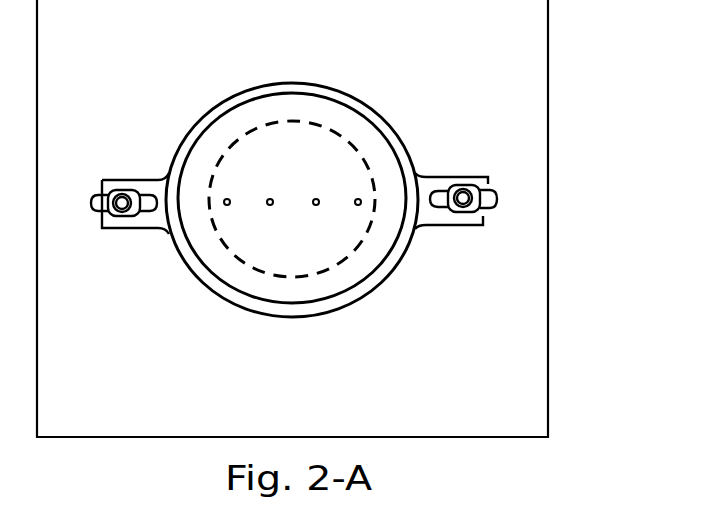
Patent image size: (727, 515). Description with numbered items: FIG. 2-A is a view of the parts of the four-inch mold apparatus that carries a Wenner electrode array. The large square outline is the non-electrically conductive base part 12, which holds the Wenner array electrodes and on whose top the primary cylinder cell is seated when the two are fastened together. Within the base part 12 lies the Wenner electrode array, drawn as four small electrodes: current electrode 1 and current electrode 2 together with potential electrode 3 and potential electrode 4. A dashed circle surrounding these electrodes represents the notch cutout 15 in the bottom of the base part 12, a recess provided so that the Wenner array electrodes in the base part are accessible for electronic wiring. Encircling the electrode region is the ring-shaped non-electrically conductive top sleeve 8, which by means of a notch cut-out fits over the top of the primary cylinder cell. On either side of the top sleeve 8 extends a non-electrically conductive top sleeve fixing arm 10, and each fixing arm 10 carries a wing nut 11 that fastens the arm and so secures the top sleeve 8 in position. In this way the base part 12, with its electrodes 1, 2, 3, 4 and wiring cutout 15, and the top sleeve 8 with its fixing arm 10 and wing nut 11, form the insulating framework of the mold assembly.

The current electrode 1 is at (226, 199).
The current electrode 2 is at (358, 205).
The potential electrode 3 is at (269, 205).
The potential electrode 4 is at (316, 199).
The non-electrically conductive top sleeve 8 is at (373, 112).
The non-electrically conductive top sleeve fixing arm 10 is at (493, 176).
The wing nut 11 is at (496, 198).
The non-electrically conductive base part 12 is at (507, 390).
The notch cutout in the bottom of the base part 15 is at (312, 279).